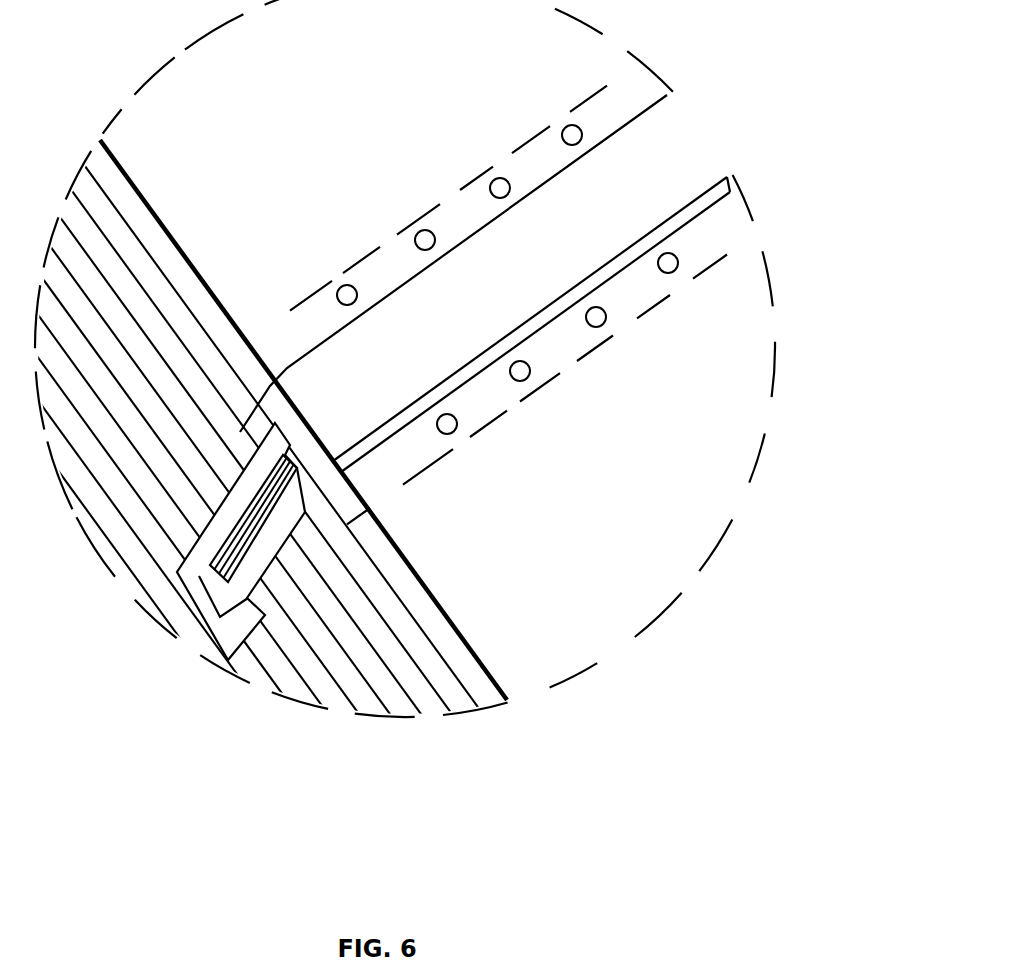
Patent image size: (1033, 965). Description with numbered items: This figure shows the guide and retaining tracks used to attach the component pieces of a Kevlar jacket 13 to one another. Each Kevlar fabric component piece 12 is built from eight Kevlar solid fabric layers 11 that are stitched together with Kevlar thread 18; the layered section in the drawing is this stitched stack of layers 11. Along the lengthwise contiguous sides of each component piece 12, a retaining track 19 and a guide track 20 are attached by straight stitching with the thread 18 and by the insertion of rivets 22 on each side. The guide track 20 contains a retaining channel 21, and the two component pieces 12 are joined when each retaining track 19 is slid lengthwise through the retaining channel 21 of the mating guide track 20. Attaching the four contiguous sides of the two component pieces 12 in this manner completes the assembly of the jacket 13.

The Kevlar solid fabric layer 11 is at (420, 660).
The Kevlar fabric component piece 12 is at (375, 147).
The jacket 13 is at (571, 259).
The Kevlar thread 18 is at (618, 350).
The retaining track 19 is at (258, 548).
The guide track 20 is at (248, 447).
The retaining channel 21 is at (213, 563).
The rivet 22 is at (607, 318).